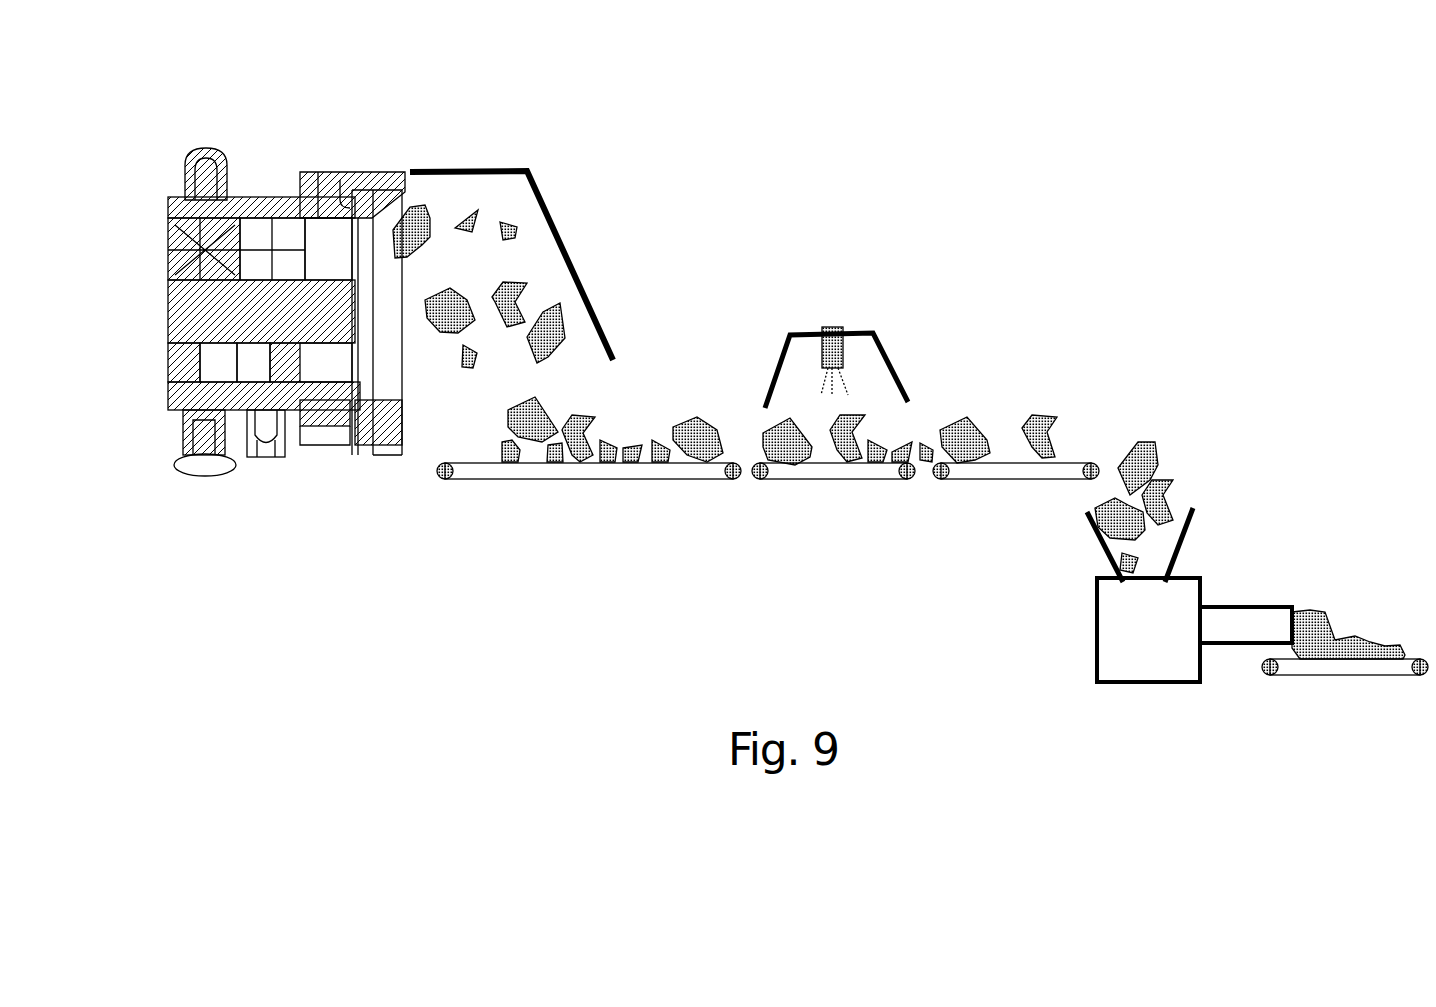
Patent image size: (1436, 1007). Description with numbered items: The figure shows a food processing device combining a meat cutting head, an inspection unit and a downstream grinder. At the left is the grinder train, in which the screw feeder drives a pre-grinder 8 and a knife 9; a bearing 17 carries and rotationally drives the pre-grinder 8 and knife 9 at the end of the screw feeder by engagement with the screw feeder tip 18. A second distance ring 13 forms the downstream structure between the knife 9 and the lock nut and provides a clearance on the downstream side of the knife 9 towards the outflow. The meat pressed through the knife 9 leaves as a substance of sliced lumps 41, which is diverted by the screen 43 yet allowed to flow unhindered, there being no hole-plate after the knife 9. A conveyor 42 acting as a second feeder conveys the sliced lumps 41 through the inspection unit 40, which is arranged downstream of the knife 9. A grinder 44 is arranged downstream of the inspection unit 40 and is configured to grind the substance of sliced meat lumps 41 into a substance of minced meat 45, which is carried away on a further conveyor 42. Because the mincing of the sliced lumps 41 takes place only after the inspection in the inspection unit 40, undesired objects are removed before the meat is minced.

The pre-grinder 8 is at (254, 457).
The knife 9 is at (276, 218).
The second distance ring 13 is at (335, 180).
The bearing 17 is at (182, 198).
The screw feeder tip 18 is at (323, 330).
The inspection unit 40 is at (790, 340).
The sliced lumps 41 is at (700, 425).
The conveyor 42 is at (541, 485).
The screen 43 is at (588, 287).
The grinder 44 is at (1238, 605).
The minced meat 45 is at (1343, 638).